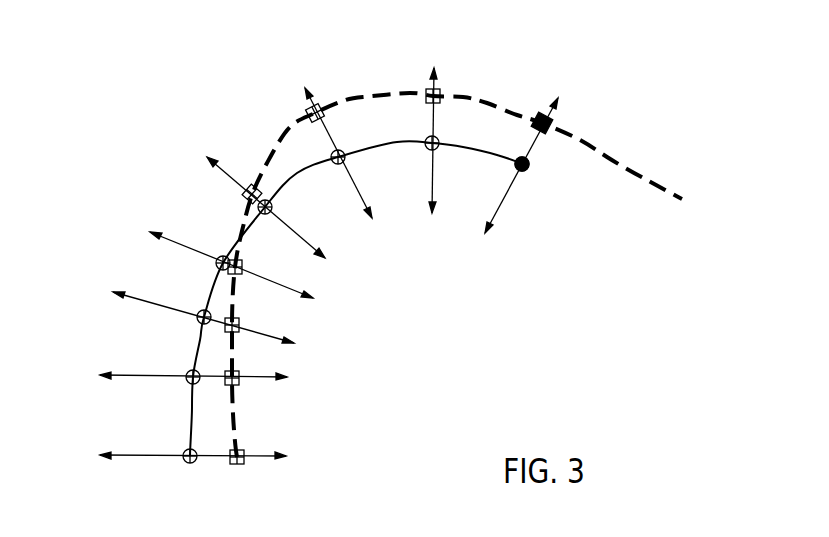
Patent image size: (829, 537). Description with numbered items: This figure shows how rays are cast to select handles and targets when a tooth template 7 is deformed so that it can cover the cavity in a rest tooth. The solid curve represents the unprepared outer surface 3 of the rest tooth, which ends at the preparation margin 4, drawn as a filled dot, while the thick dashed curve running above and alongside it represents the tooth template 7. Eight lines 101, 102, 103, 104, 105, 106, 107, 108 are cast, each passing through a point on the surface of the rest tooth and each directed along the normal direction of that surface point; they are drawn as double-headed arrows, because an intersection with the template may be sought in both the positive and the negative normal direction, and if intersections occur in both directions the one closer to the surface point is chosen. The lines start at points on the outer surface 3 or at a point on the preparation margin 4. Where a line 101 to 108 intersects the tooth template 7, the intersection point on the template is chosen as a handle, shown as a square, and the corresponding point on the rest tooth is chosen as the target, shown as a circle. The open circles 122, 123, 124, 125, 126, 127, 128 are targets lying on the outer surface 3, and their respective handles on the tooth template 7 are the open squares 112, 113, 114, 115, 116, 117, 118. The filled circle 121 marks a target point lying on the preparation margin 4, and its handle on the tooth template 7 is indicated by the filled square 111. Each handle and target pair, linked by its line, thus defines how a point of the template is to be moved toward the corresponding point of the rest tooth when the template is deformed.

The outer surface 3 is at (195, 355).
The tooth template 7 is at (643, 175).
The preparation margin 4 is at (528, 168).
The line 101 is at (560, 95).
The line 102 is at (433, 66).
The line 103 is at (304, 86).
The line 104 is at (205, 156).
The line 105 is at (148, 231).
The line 106 is at (112, 291).
The line 107 is at (99, 375).
The line 108 is at (99, 455).
The handle 111 is at (552, 124).
The handle 112 is at (440, 94).
The handle 113 is at (318, 107).
The handle 114 is at (248, 186).
The handle 115 is at (243, 268).
The handle 116 is at (240, 324).
The handle 117 is at (240, 385).
The handle 118 is at (243, 463).
The target 121 is at (525, 172).
The target 122 is at (438, 149).
The target 123 is at (345, 160).
The target 124 is at (272, 208).
The target 125 is at (216, 265).
The target 126 is at (199, 320).
The target 127 is at (189, 382).
The target 128 is at (187, 462).